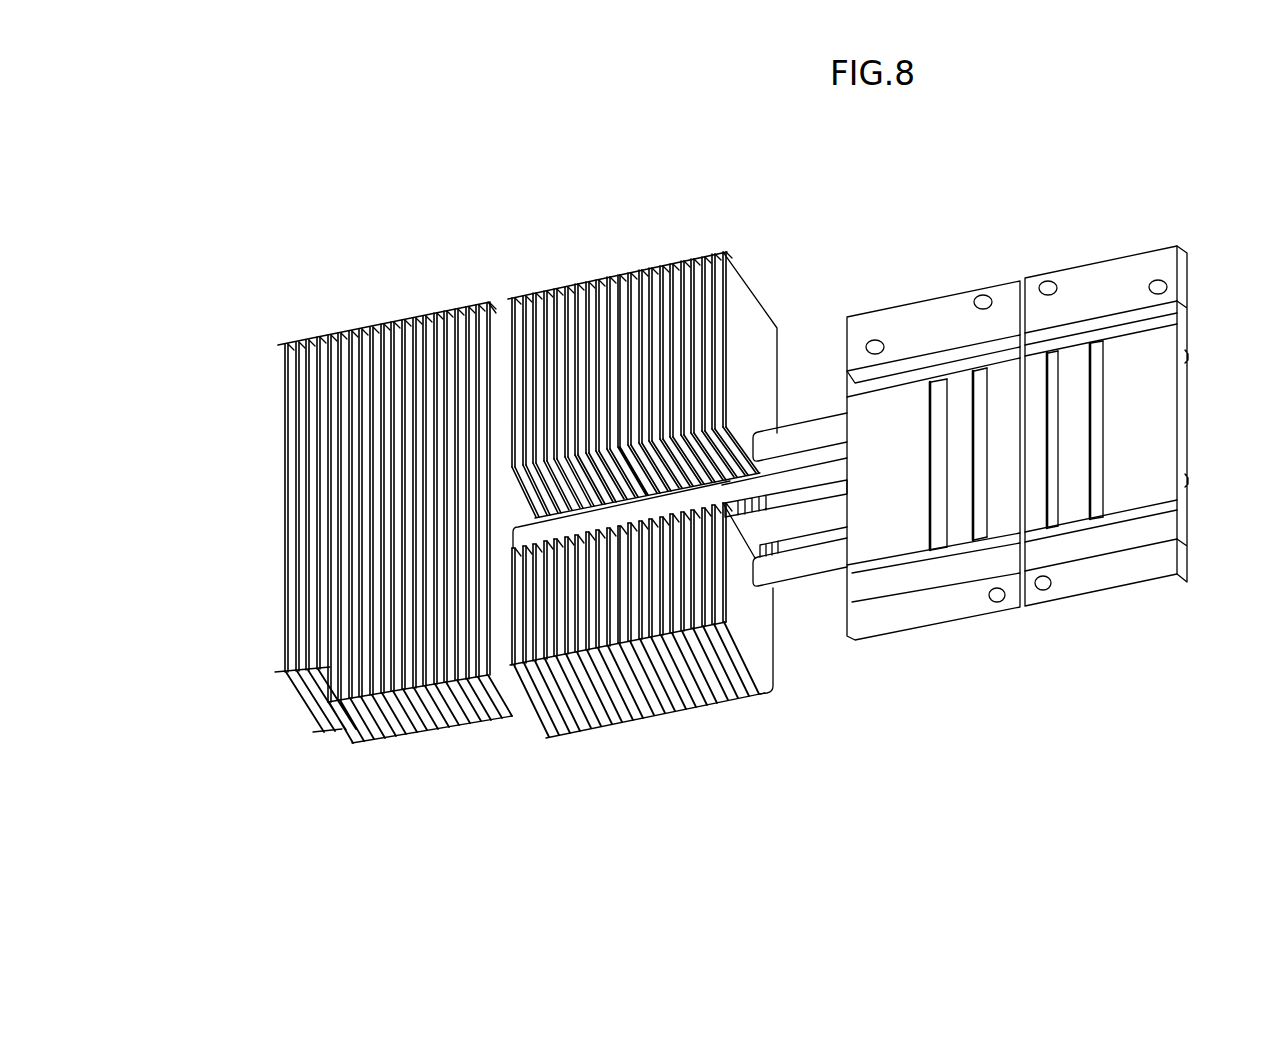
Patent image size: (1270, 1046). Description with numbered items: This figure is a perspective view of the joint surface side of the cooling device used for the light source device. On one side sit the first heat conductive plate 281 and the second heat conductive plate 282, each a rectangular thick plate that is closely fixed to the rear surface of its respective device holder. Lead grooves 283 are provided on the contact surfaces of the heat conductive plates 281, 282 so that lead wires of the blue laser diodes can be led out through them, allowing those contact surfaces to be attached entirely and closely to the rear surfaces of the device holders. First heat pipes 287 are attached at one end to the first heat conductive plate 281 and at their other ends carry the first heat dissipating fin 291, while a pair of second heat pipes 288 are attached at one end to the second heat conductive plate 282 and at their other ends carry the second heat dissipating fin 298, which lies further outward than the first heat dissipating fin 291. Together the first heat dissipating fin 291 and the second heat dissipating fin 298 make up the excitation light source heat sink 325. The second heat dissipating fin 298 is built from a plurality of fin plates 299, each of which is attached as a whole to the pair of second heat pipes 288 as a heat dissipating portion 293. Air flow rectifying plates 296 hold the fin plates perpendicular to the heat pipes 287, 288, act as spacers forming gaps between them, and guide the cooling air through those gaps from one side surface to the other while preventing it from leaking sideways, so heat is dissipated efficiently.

The first heat conductive plate 281 is at (1133, 573).
The second heat conductive plate 282 is at (935, 603).
The lead grooves 283 is at (978, 375).
The first heat pipes 287 is at (780, 438).
The second heat pipes 288 is at (790, 526).
The first heat dissipating fin 291 is at (657, 747).
The heat dissipating portions 293 is at (752, 312).
The air flow rectifying plates 296 is at (284, 344).
The second heat dissipating fin 298 is at (435, 768).
The fin plates 299 is at (452, 283).
The excitation light source heat sink 325 is at (525, 252).